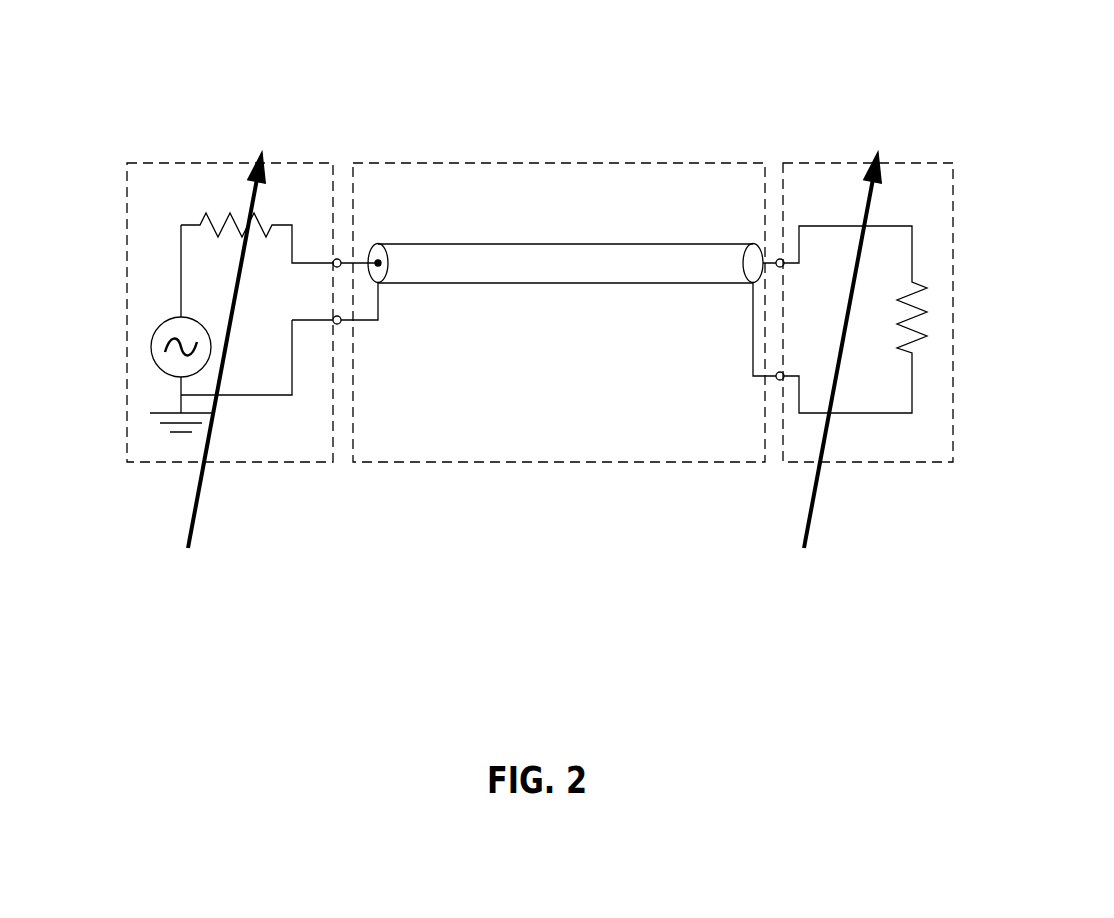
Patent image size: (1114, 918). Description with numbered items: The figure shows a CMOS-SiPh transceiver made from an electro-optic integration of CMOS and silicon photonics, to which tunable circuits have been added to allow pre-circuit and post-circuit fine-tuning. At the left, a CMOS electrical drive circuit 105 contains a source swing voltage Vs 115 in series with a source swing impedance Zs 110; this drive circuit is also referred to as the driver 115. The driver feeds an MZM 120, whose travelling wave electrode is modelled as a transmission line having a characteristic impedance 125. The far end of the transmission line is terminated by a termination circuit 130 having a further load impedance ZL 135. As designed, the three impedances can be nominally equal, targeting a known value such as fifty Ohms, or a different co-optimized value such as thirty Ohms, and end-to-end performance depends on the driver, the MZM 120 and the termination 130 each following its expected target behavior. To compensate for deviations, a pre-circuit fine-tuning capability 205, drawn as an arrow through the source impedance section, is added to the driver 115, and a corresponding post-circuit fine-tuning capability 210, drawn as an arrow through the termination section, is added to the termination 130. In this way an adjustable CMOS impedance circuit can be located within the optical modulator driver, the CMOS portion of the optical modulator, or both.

The CMOS electrical drive circuit 105 is at (163, 462).
The source swing impedance Zs 110 is at (207, 213).
The source swing voltage Vs 115 is at (173, 318).
The MZM 120 is at (395, 462).
The impedance Z0 125 is at (596, 244).
The termination circuit 130 is at (857, 462).
The impedance ZL 135 is at (903, 325).
The pre-circuit fine-tuning capability 205 is at (198, 502).
The load-side arrow 210 is at (810, 505).